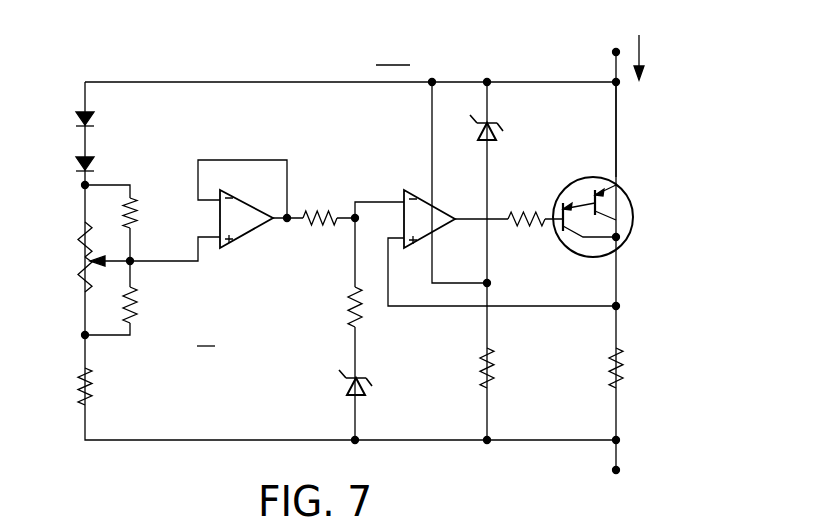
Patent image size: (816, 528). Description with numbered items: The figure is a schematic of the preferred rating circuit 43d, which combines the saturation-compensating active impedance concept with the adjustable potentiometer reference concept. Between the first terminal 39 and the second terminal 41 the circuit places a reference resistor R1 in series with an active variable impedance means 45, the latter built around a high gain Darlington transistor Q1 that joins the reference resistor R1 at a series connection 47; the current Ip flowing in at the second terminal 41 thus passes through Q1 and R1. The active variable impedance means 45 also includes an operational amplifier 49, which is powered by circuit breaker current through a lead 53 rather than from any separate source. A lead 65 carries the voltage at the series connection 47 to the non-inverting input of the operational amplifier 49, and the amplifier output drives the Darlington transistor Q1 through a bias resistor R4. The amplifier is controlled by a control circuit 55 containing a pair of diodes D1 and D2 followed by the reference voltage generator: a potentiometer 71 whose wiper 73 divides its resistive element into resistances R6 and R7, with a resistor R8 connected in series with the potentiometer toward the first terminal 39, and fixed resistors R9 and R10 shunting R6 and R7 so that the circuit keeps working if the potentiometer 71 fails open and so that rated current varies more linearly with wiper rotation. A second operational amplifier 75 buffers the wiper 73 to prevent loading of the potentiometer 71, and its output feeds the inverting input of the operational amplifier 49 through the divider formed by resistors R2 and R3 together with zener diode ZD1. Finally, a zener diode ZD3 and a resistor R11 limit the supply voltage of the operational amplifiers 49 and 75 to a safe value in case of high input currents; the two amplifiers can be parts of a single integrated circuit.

The first terminal 39 is at (620, 470).
The second terminal 41 is at (612, 52).
The circuit 43d is at (393, 54).
The active variable impedance means 45 is at (624, 161).
The series connection 47 is at (620, 306).
The operational amplifier 49 is at (432, 205).
The lead 53 is at (430, 148).
The control circuit 55 is at (206, 336).
The lead 65 is at (528, 306).
The potentiometer 71 is at (54, 257).
The wiper 73 is at (115, 263).
The second operational amplifier 75 is at (228, 192).
The regulated current Ip is at (645, 50).
The diode D1 is at (92, 120).
The diode D2 is at (92, 165).
The reference resistor R1 is at (622, 370).
The resistor R2 is at (312, 209).
The resistor R3 is at (360, 304).
The bias resistor R4 is at (516, 210).
The resistance R6 is at (75, 236).
The resistance R7 is at (78, 279).
The resistor R8 is at (78, 392).
The fixed resistor R9 is at (136, 214).
The fixed resistor R10 is at (136, 314).
The resistor R11 is at (492, 374).
The zener diode ZD1 is at (362, 395).
The zener diode ZD3 is at (500, 139).
The Darlington transistor Q1 is at (632, 226).